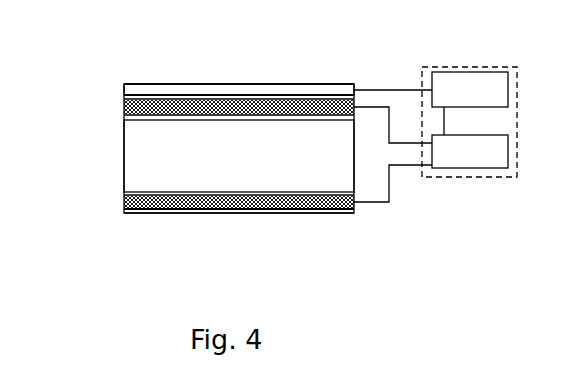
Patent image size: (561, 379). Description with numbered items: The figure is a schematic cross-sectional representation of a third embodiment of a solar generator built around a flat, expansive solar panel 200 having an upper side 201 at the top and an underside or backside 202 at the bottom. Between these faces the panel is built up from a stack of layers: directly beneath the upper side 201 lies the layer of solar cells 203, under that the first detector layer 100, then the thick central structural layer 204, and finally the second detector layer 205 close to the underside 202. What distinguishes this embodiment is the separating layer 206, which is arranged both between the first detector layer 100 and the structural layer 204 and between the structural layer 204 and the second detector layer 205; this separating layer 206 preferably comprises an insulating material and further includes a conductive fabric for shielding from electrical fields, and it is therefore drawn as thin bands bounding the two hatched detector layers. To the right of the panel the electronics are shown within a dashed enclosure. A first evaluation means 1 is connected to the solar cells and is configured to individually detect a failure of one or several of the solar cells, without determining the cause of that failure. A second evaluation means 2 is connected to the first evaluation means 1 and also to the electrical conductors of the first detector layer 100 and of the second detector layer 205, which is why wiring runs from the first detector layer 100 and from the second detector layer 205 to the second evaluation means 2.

The solar panel 200 is at (239, 116).
The upper side 201 is at (256, 79).
The underside 202 is at (263, 213).
The layer of solar cells 203 is at (118, 85).
The structural layer 204 is at (118, 150).
The second detector layer 205 is at (118, 202).
The separating layer 206 is at (118, 98).
The first detector layer 100 is at (118, 108).
The first evaluation means 1 is at (470, 89).
The second evaluation means 2 is at (470, 151).